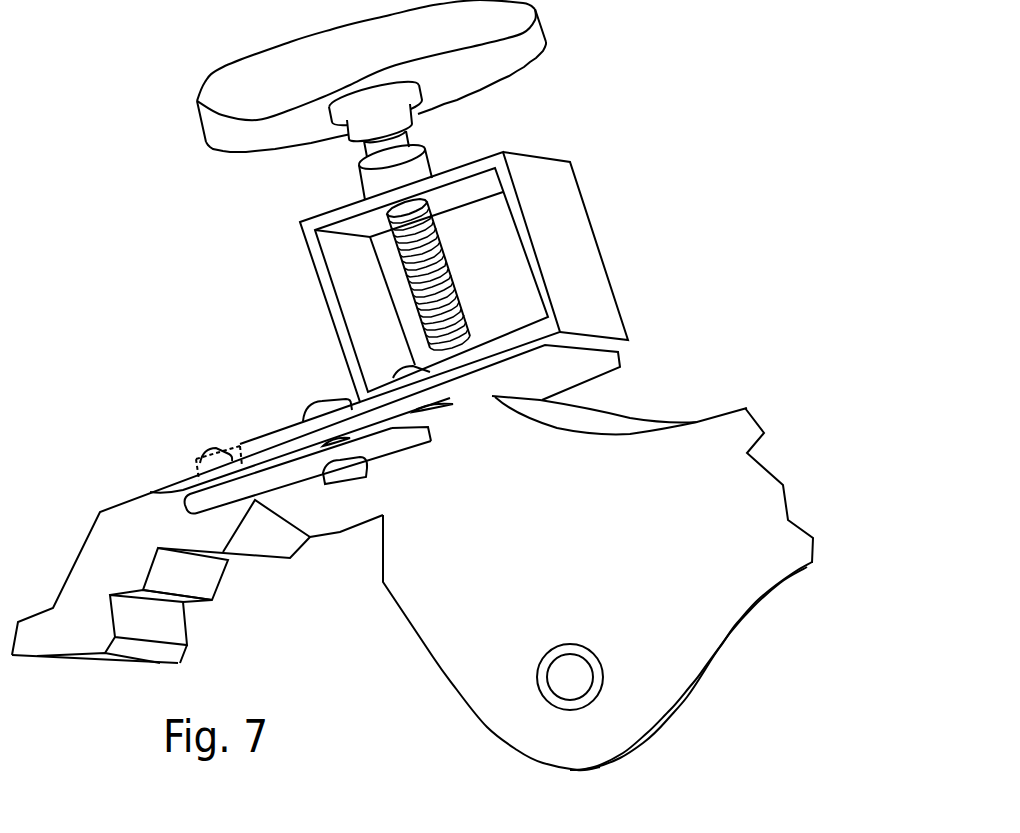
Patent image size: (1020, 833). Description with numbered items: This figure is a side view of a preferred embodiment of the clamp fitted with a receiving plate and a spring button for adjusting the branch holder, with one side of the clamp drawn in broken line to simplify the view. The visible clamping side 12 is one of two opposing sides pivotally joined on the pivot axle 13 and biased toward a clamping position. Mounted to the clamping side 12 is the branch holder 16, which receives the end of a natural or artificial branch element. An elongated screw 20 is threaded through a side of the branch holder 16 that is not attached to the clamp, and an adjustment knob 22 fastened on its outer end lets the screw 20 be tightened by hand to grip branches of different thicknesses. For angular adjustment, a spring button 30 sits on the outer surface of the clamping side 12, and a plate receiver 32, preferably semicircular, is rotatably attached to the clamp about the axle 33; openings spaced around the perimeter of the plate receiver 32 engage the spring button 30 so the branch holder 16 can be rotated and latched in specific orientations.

The clamping side 12 is at (668, 493).
The pivot axle 13 is at (577, 677).
The branch holder 16 is at (572, 255).
The elongated screw 20 is at (428, 258).
The adjustment knob 22 is at (505, 27).
The spring button 30 is at (202, 453).
The plate receiver 32 is at (270, 445).
The axle 33 is at (322, 400).